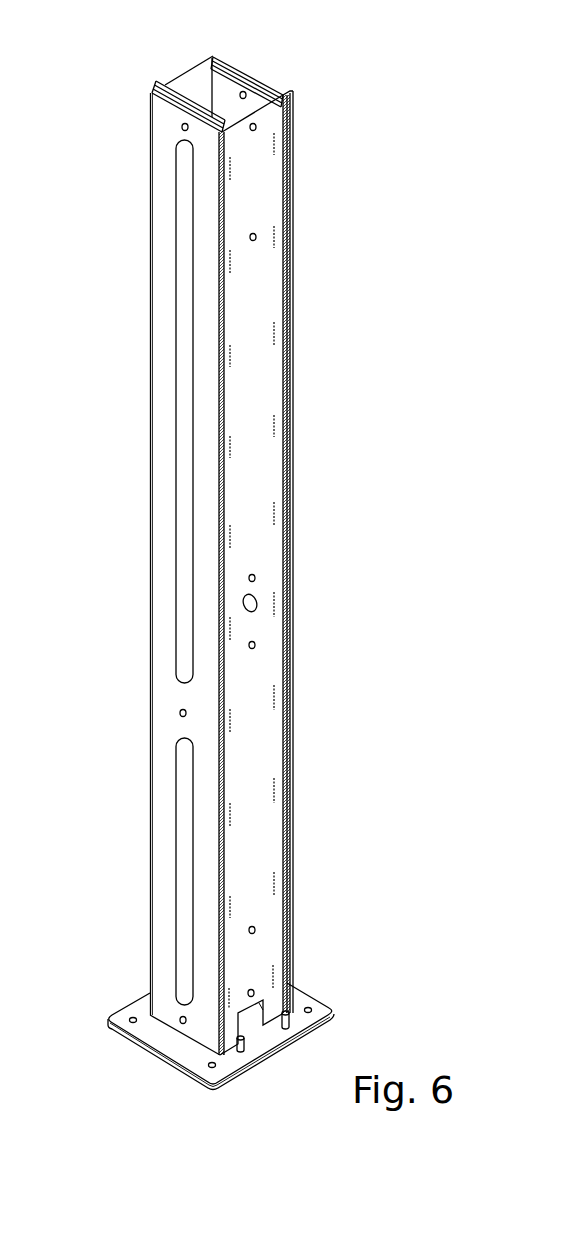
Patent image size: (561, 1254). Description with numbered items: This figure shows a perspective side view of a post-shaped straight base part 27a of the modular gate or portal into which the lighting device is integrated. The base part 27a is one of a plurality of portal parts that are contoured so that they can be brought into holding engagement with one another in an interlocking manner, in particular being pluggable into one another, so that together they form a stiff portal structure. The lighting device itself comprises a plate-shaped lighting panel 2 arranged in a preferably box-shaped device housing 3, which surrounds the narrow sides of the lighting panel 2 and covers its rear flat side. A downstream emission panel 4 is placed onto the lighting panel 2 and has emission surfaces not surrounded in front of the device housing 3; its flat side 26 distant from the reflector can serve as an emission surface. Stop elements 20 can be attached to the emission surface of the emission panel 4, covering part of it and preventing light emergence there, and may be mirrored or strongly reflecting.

The lighting panel 2 is at (192, 113).
The device housing 3 is at (265, 192).
The emission panel 4 is at (168, 92).
The stop elements 20 is at (158, 292).
The flat side of the emission panel 26 is at (183, 375).
The straight base part 27a is at (291, 395).